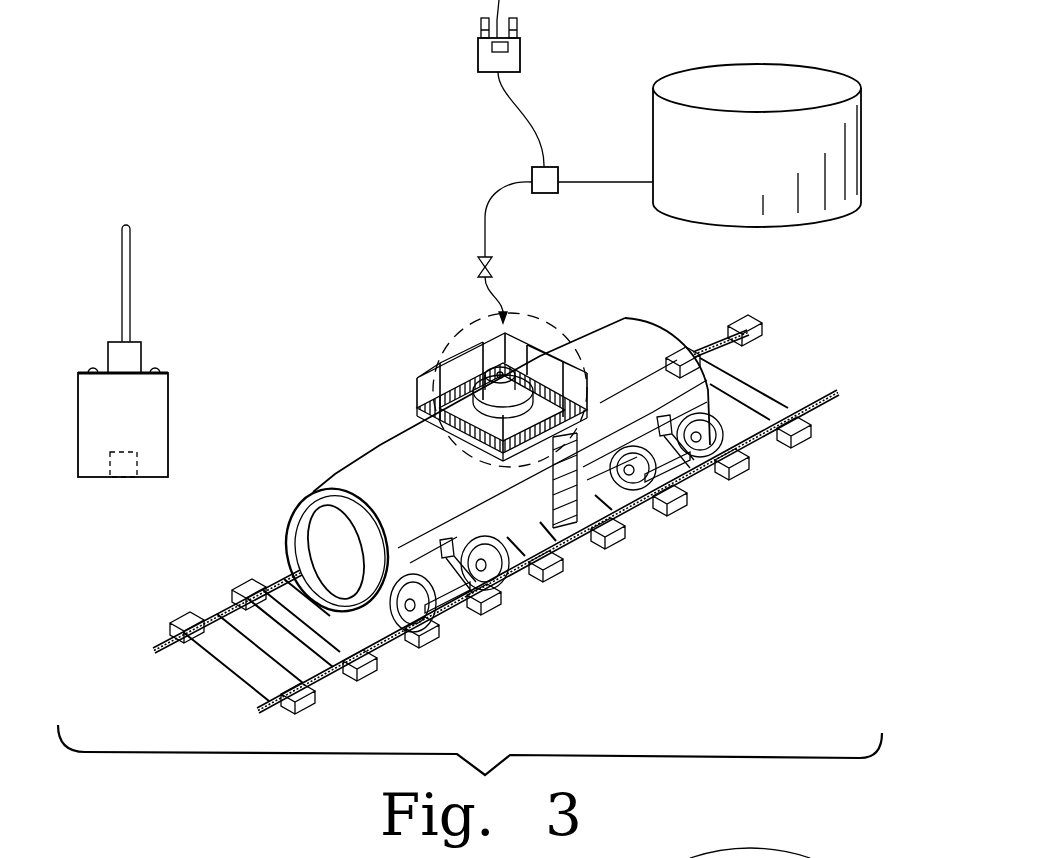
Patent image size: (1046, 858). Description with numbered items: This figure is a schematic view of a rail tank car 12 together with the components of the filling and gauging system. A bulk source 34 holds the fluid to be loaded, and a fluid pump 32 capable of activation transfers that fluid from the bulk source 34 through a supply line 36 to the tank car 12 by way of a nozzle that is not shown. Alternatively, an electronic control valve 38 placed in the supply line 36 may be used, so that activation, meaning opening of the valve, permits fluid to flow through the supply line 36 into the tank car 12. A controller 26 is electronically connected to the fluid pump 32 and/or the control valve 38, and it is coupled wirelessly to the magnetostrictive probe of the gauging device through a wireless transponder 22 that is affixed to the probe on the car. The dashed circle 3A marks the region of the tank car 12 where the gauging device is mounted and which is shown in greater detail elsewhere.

The tank car 12 is at (650, 326).
The hatch / valve assembly detail area 3A is at (445, 342).
The transponder 22 is at (168, 412).
The controller 26 is at (478, 52).
The fluid pump 32 is at (548, 193).
The bulk source 34 is at (790, 85).
The supply line 36 is at (488, 200).
The electronic control valve 38 is at (492, 267).